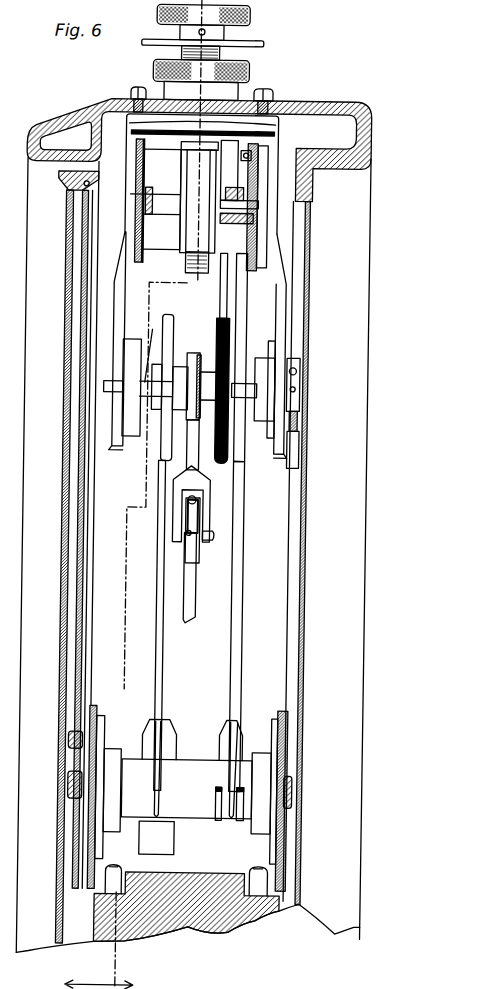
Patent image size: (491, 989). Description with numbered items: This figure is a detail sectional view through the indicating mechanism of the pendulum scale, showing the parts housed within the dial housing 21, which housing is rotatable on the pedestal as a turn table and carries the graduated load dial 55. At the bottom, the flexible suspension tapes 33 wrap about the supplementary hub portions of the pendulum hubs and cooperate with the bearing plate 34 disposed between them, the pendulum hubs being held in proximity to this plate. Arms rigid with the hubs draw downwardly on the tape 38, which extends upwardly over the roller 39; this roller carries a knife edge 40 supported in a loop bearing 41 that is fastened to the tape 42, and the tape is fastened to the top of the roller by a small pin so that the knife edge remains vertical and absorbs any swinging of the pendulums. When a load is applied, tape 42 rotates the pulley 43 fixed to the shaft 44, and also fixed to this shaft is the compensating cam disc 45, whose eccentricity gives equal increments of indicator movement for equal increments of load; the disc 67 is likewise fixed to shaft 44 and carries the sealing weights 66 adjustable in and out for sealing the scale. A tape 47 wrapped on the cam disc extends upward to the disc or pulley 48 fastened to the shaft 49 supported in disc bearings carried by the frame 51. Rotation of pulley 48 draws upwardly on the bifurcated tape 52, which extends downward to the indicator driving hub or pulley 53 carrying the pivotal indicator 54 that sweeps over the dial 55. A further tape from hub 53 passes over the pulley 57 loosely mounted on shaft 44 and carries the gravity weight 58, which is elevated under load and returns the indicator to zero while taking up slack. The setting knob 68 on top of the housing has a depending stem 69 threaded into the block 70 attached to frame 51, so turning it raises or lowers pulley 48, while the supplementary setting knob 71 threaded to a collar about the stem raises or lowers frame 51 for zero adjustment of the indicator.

The dial housing 21 is at (110, 80).
The setting knob 68 is at (243, 15).
The supplementary setting knob 71 is at (243, 70).
The stem 69 is at (184, 148).
The frame 51 is at (141, 170).
The block 70 is at (185, 228).
The shaft 49 is at (274, 212).
The disc or pulley 48 is at (235, 260).
The tape 47 is at (217, 293).
The compensating cam disc 45 is at (216, 322).
The pulley 43 is at (206, 340).
The shaft 44 is at (146, 355).
The pulley 57 is at (161, 455).
The tape 42 is at (198, 463).
The loop bearing 41 is at (209, 492).
The roller 39 is at (199, 507).
The knife edge 40 is at (212, 535).
The tape 38 is at (196, 593).
The pivotal indicator 54 is at (85, 635).
The tape 52 is at (245, 578).
The graduated load dial 55 is at (88, 256).
The sealing weights 66 is at (298, 372).
The disc 67 is at (300, 413).
The indicator driving hub or pulley 53 is at (204, 778).
The gravity weight 58 is at (180, 842).
The flexible suspension tapes 33 is at (128, 874).
The bearing plate 34 is at (194, 928).